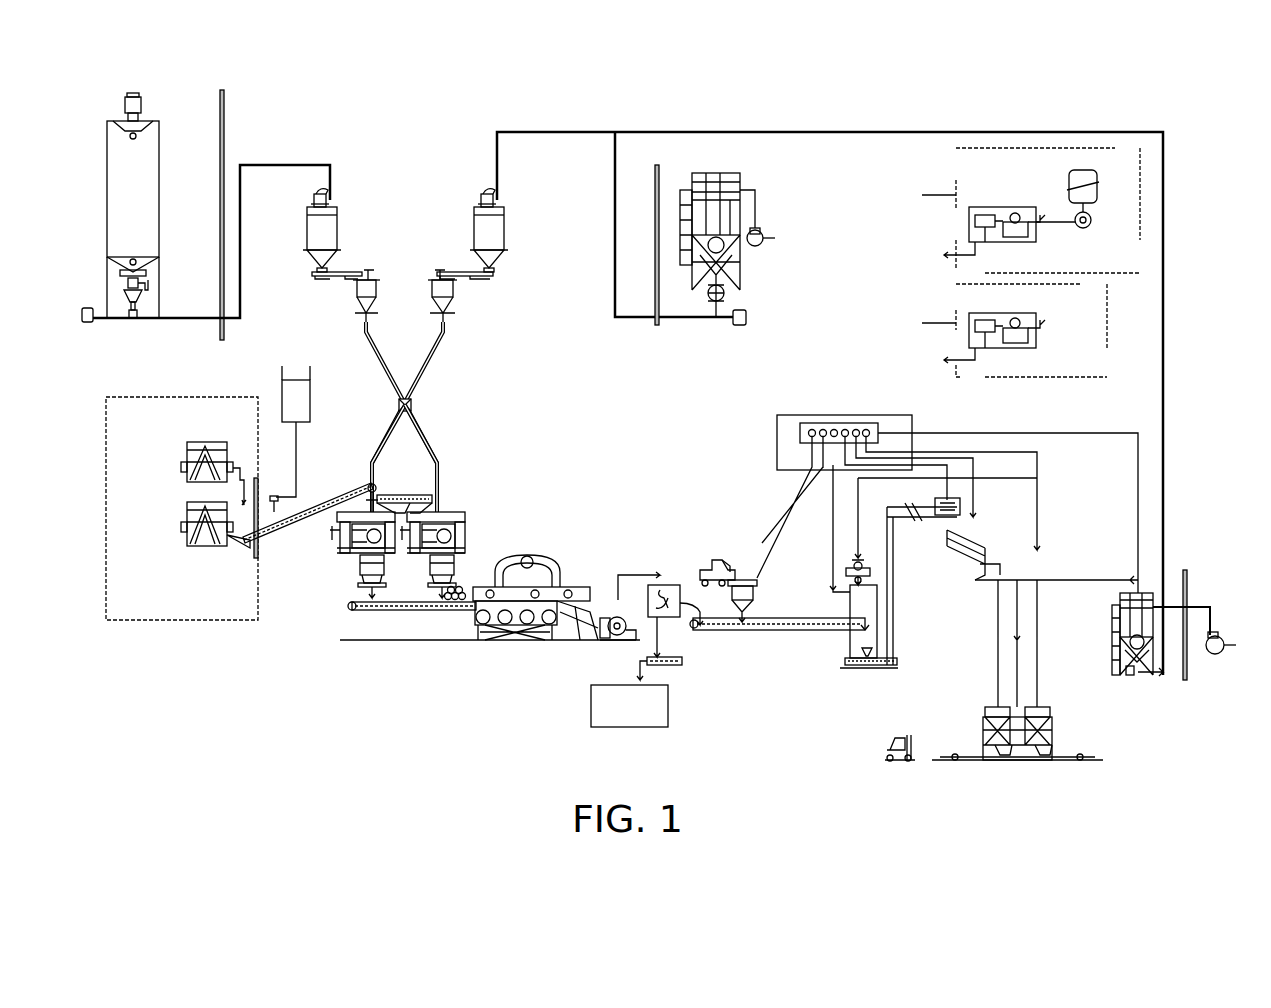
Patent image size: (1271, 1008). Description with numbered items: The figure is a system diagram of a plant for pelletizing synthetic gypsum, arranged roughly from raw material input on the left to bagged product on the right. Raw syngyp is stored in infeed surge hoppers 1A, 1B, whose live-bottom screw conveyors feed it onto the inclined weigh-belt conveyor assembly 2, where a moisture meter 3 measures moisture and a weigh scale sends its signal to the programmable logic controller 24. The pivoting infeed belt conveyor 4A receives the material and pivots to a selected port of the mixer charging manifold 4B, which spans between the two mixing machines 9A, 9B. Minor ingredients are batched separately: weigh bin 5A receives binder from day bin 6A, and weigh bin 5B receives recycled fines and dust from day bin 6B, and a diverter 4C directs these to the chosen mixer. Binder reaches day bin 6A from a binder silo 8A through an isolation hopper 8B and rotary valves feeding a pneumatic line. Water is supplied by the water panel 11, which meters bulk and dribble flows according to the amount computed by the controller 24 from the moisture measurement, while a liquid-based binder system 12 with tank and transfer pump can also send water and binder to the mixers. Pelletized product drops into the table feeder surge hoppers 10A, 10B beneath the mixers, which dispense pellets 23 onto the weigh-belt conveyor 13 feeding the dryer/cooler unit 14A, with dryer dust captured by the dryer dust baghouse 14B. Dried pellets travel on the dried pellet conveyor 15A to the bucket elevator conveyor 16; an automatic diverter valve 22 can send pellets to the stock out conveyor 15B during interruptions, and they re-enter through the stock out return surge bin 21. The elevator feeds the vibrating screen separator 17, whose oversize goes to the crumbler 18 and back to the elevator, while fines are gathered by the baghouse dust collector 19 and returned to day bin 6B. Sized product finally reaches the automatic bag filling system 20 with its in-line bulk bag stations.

The infeed surge hopper 1A is at (187, 505).
The infeed surge hopper 1B is at (187, 442).
The inclined weigh-belt conveyor assembly 2 is at (355, 478).
The moisture meter 3 is at (274, 496).
The pivoting infeed belt conveyor 4A is at (394, 458).
The mixer charging manifold 4B is at (444, 468).
The diverter 4C is at (411, 405).
The weigh bin 5A is at (376, 282).
The weigh bin 5B is at (453, 296).
The day bin 6A is at (337, 228).
The day bin 6B is at (504, 228).
The binder silo 8A is at (107, 186).
The isolation hopper 8B is at (148, 298).
The mixing machine 9A is at (342, 553).
The mixing machine 9B is at (465, 524).
The table feeder surge hopper 10A is at (358, 572).
The table feeder surge hopper 10B is at (430, 562).
The water panel 11 is at (978, 330).
The liquid-based binder system 12 is at (1100, 188).
The weigh-belt conveyor 13 is at (475, 628).
The dryer/cooler unit 14A is at (579, 644).
The dryer dust baghouse 14B is at (730, 238).
The dried pellet conveyor 15A is at (777, 634).
The stock out conveyor 15B is at (659, 692).
The bucket elevator conveyor 16 is at (864, 580).
The vibrating screen separator 17 is at (982, 530).
The crumbler 18 is at (845, 531).
The baghouse dust collector 19 is at (1112, 628).
The automatic bag filling system 20 is at (994, 746).
The stock out return surge bin 21 is at (746, 591).
The automatic diverter valve 22 is at (660, 604).
The pellets 23 is at (458, 590).
The programmable logic controller 24 is at (310, 398).